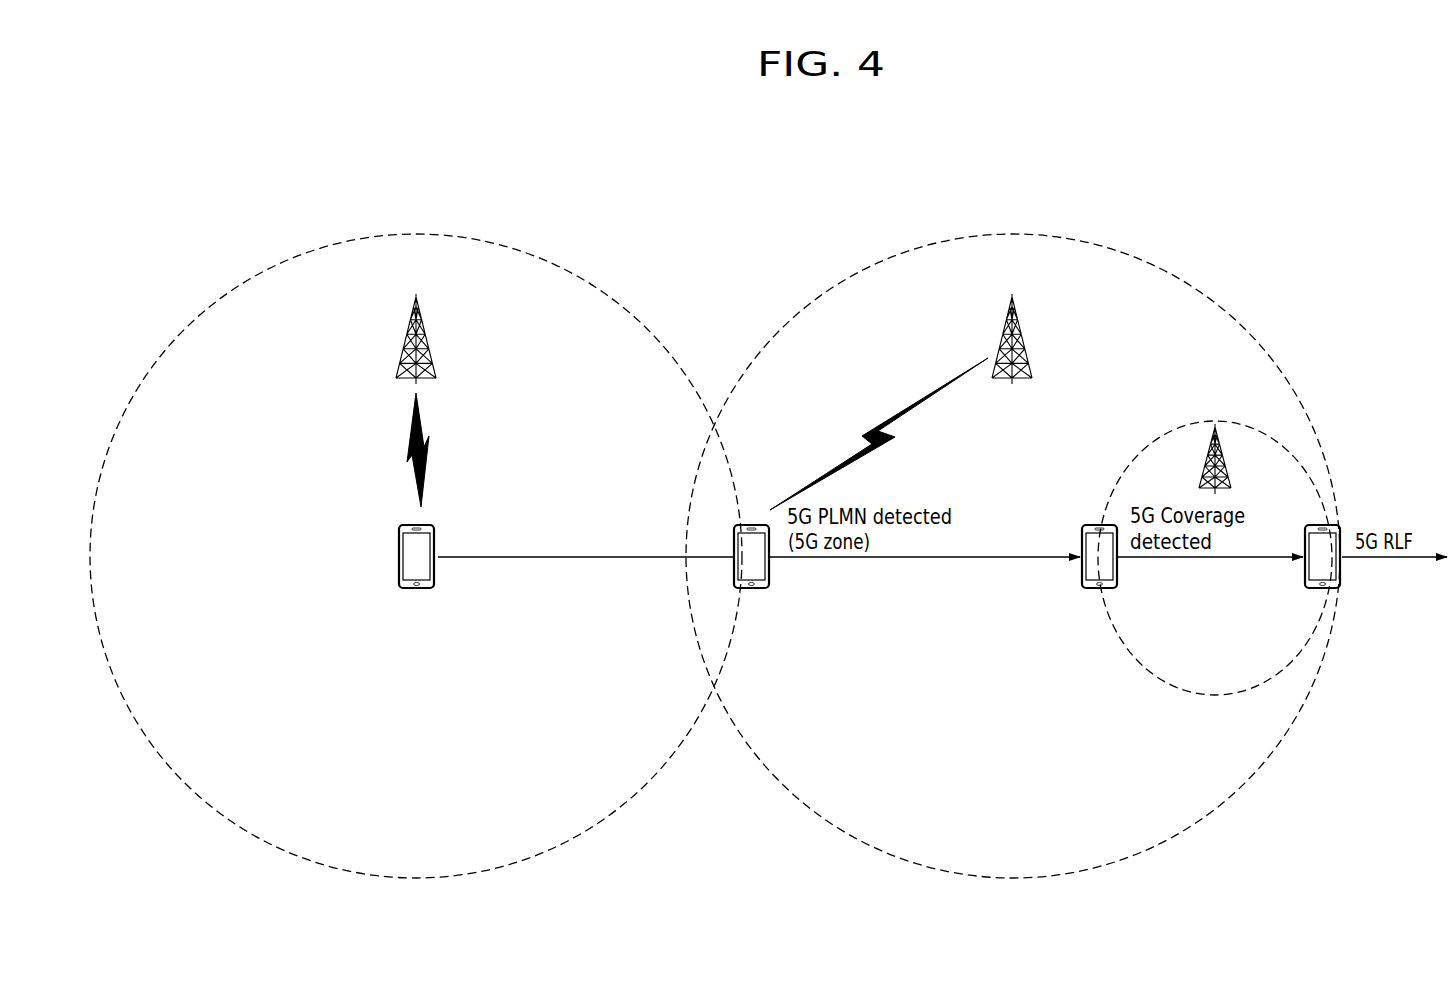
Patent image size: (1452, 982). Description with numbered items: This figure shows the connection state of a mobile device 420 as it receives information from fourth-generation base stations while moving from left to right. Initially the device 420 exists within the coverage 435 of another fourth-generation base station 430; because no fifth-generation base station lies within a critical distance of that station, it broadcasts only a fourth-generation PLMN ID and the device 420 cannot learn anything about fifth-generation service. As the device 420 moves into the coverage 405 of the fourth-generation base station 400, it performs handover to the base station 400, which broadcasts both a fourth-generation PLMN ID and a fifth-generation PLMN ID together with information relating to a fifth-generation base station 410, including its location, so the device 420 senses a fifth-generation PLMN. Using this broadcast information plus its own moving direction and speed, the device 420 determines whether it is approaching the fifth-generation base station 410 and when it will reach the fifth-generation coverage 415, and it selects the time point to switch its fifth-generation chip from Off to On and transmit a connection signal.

The 4G base station 400 is at (1025, 340).
The coverage 405 is at (1198, 287).
The 5G base station 410 is at (1227, 473).
The coverage of the 5G base station 415 is at (1213, 420).
The device 420 is at (752, 591).
The another 4G base station 430 is at (428, 338).
The coverage 435 is at (600, 287).